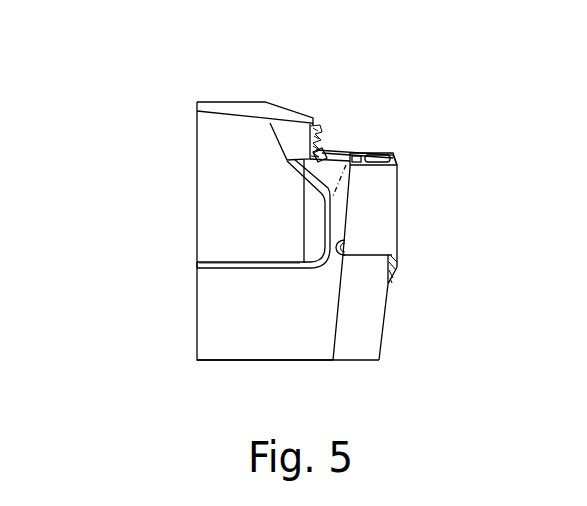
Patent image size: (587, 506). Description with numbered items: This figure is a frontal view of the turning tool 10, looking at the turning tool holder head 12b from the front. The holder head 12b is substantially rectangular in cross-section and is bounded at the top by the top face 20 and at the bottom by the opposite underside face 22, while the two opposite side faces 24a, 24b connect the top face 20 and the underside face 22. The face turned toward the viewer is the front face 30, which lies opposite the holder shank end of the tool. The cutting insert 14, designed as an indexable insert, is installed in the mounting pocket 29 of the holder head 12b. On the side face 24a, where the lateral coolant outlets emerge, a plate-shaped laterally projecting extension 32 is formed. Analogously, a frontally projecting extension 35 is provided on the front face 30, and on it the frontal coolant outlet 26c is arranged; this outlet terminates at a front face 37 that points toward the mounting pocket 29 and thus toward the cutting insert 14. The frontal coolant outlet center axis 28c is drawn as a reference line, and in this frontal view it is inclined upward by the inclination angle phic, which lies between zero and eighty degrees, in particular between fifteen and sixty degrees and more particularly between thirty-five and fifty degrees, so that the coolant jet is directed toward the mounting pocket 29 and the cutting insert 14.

The turning tool 10 is at (398, 128).
The turning tool holder head 12b is at (238, 110).
The top face 20 is at (297, 105).
The frontal coolant outlet center axis 28c is at (342, 163).
The front face 37 is at (318, 192).
The frontal coolant outlet 26c is at (305, 203).
The frontally projecting extension 35 is at (312, 247).
The side face 24b is at (182, 259).
The cutting insert 14 is at (386, 205).
The angle φc phic is at (368, 163).
The laterally projecting extension 32 is at (390, 257).
The underside face 22 is at (352, 362).
The side face 24a is at (400, 290).
The mounting pocket 29 is at (356, 258).
The front face 30 is at (267, 350).